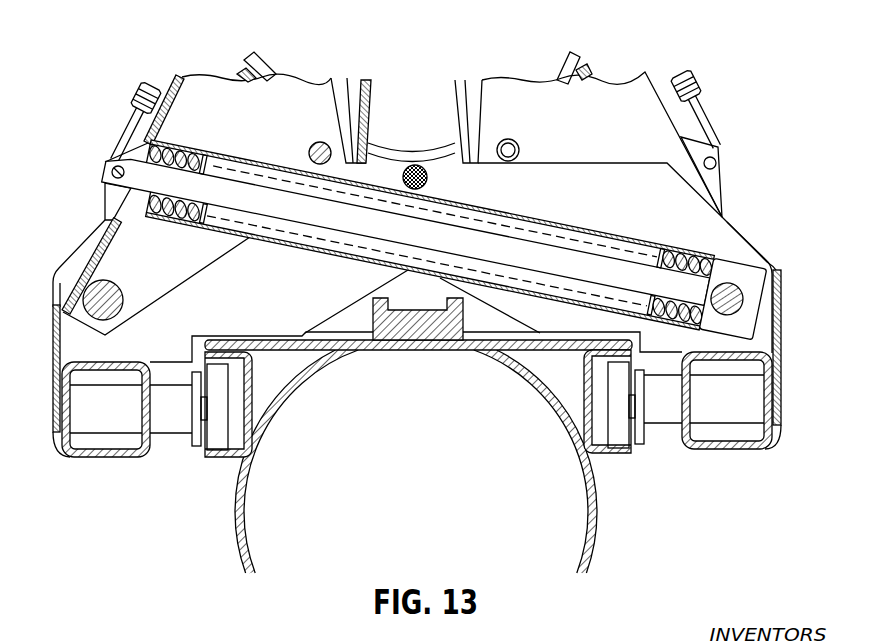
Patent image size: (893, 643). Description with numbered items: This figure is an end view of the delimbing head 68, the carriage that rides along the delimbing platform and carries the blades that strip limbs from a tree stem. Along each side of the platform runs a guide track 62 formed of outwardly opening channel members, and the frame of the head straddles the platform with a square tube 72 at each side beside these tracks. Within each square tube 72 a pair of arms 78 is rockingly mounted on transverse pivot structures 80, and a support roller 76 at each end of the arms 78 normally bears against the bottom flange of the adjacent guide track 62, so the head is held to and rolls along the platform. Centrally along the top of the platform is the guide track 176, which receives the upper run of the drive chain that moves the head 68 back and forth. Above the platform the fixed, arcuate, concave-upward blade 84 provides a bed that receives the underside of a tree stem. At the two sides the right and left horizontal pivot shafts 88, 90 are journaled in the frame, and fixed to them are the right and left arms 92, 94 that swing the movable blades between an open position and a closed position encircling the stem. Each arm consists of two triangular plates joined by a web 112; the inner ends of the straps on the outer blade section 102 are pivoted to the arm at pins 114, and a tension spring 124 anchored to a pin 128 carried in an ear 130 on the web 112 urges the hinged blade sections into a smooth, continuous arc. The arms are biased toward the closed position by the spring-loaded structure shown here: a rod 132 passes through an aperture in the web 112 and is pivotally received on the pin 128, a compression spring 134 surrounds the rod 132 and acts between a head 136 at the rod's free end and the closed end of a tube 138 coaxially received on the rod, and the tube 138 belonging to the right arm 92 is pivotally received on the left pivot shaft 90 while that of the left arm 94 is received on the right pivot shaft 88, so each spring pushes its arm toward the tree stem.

The delimbing head 68 is at (463, 43).
The left arm 94 is at (216, 84).
The right arm 92 is at (607, 92).
The arcuate plate-like blade 84 is at (567, 76).
The outer blade section 102 is at (458, 90).
The tension spring 124 is at (134, 94).
The pin 114 is at (318, 143).
The pin 128 is at (112, 167).
The ear 130 is at (108, 200).
The web 112 is at (104, 243).
The left pivot shaft 90 is at (112, 291).
The rod 132 is at (578, 262).
The tube 138 is at (333, 256).
The compression spring 134 is at (196, 214).
The head 136 is at (723, 257).
The right pivot shaft 88 is at (744, 293).
The guide track 176 is at (413, 310).
The guide track 62 is at (246, 390).
The support roller 76 is at (222, 451).
The arm 78 is at (197, 447).
The square tube 72 is at (105, 458).
The pivot structure 80 is at (165, 434).